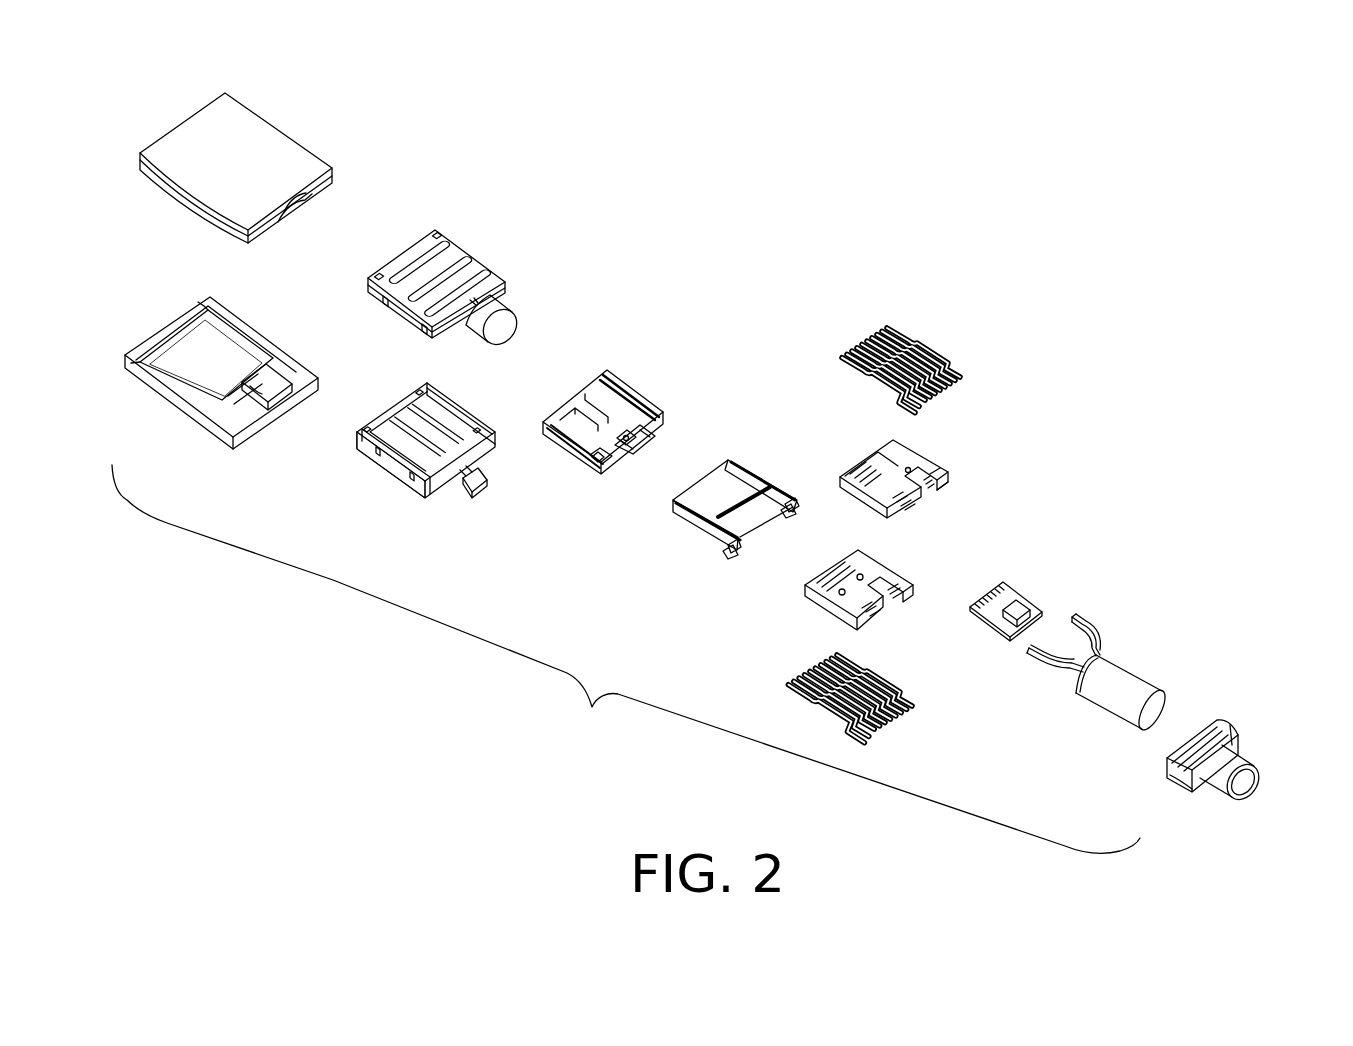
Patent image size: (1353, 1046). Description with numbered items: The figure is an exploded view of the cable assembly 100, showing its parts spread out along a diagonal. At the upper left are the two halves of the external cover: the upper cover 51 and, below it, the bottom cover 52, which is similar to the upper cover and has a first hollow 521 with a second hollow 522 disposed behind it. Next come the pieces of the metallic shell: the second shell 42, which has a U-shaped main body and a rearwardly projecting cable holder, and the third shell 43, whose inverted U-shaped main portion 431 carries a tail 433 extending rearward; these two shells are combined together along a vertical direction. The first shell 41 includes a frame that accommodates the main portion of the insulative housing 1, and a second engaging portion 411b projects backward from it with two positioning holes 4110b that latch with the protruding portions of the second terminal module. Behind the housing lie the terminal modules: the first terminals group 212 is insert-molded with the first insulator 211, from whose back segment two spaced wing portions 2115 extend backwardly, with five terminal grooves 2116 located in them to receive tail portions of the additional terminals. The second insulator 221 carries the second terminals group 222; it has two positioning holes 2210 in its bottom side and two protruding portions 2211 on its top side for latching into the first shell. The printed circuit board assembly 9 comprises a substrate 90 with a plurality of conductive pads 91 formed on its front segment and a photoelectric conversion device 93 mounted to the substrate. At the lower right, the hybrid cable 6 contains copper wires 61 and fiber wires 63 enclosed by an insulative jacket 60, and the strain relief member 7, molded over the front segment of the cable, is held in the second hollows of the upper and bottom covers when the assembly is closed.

The cable assembly 100 is at (626, 659).
The upper cover 51 is at (288, 116).
The bottom cover 52 is at (230, 399).
The first hollow 521 is at (193, 373).
The second hollow 522 is at (263, 407).
The second shell 42 is at (488, 238).
The third shell 43 is at (435, 467).
The main portion 431 is at (395, 467).
The tail 433 is at (485, 490).
The first shell 41 is at (631, 446).
The positioning holes 4110b is at (592, 460).
The second engaging portion 411b is at (625, 443).
The insulative housing 1 is at (767, 468).
The first terminals group 212 is at (928, 328).
The first insulator 211 is at (945, 454).
The protruding portions 2211 is at (908, 468).
The wing portions 2115 is at (940, 477).
The terminal grooves 2116 is at (945, 481).
The second insulator 221 is at (878, 572).
The positioning holes 2210 is at (859, 574).
The second terminals group 222 is at (878, 663).
The printed circuit board assembly 9 is at (1050, 576).
The substrate 90 is at (1015, 588).
The conductive pads 91 is at (992, 585).
The photoelectric conversion device 93 is at (1023, 607).
The cable 6 is at (1076, 689).
The insulative jacket 60 is at (1120, 692).
The copper wires 61 is at (1035, 667).
The fiber wires 63 is at (1060, 642).
The strain relief member 7 is at (1248, 717).